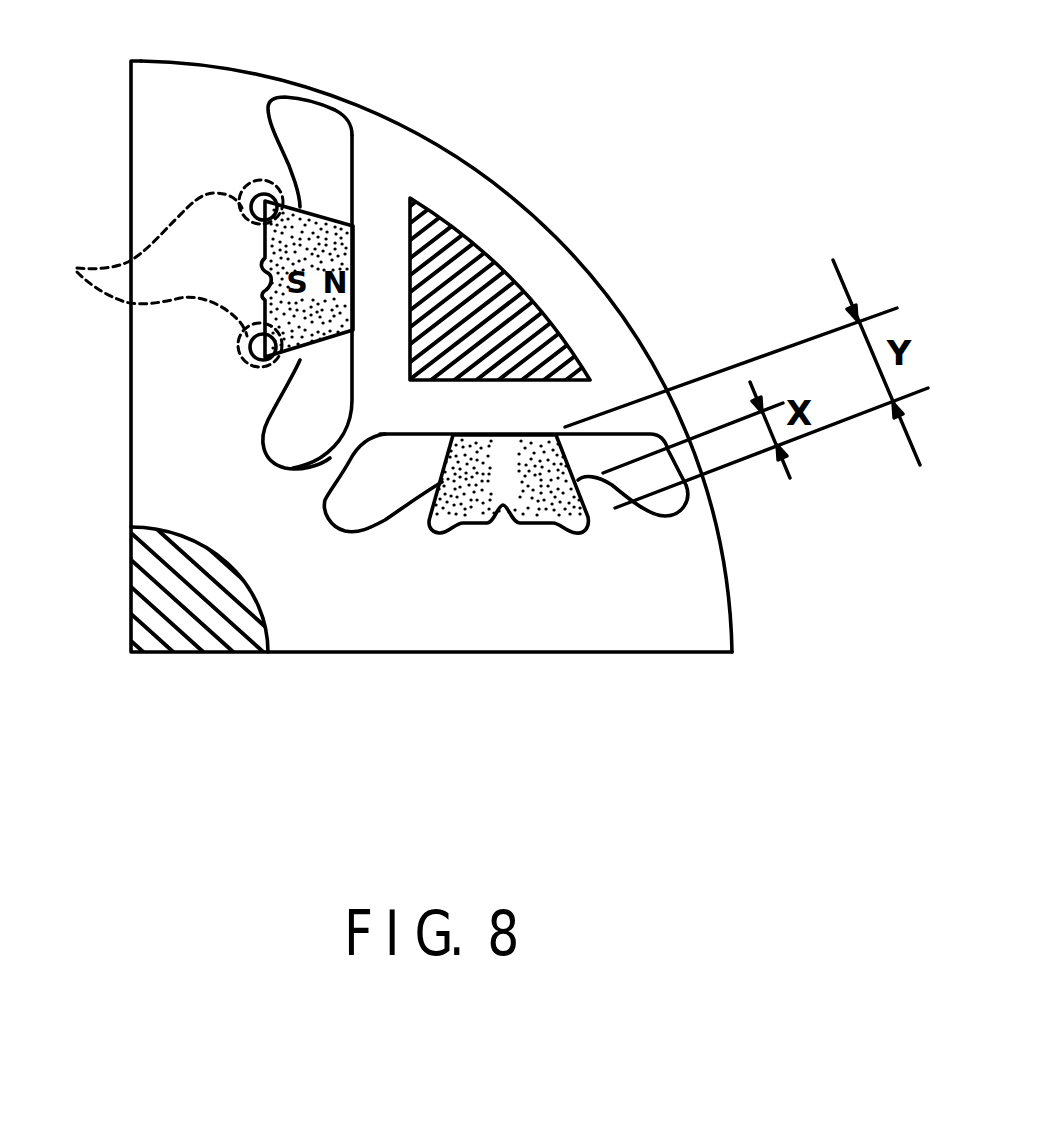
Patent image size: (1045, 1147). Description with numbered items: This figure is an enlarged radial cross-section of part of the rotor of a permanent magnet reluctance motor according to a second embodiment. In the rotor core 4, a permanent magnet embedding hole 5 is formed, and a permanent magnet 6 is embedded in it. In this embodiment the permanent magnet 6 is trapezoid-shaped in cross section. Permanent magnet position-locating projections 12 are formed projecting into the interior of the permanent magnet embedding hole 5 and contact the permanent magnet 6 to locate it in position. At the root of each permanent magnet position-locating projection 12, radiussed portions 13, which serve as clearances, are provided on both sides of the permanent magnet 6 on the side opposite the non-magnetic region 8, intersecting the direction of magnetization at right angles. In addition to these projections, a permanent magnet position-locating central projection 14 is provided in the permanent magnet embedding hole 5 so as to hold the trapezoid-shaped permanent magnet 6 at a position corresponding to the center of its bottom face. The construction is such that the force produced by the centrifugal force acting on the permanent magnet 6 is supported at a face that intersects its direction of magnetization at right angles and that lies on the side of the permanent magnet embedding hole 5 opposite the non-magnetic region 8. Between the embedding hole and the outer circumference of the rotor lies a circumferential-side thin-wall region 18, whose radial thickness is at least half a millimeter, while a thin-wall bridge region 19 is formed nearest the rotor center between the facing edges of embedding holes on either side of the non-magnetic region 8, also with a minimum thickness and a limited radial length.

The rotor core 4 is at (616, 600).
The permanent magnet embedding hole 5 is at (363, 503).
The permanent magnet 6 is at (547, 432).
The non-magnetic region 8 is at (497, 305).
The permanent magnet position-locating projection 12 is at (298, 203).
The radiussed portion 13 is at (168, 273).
The permanent magnet position-locating central projection 14 is at (500, 525).
The circumferential-side thin-wall region 18 is at (318, 95).
The thin-wall bridge region 19 is at (298, 472).